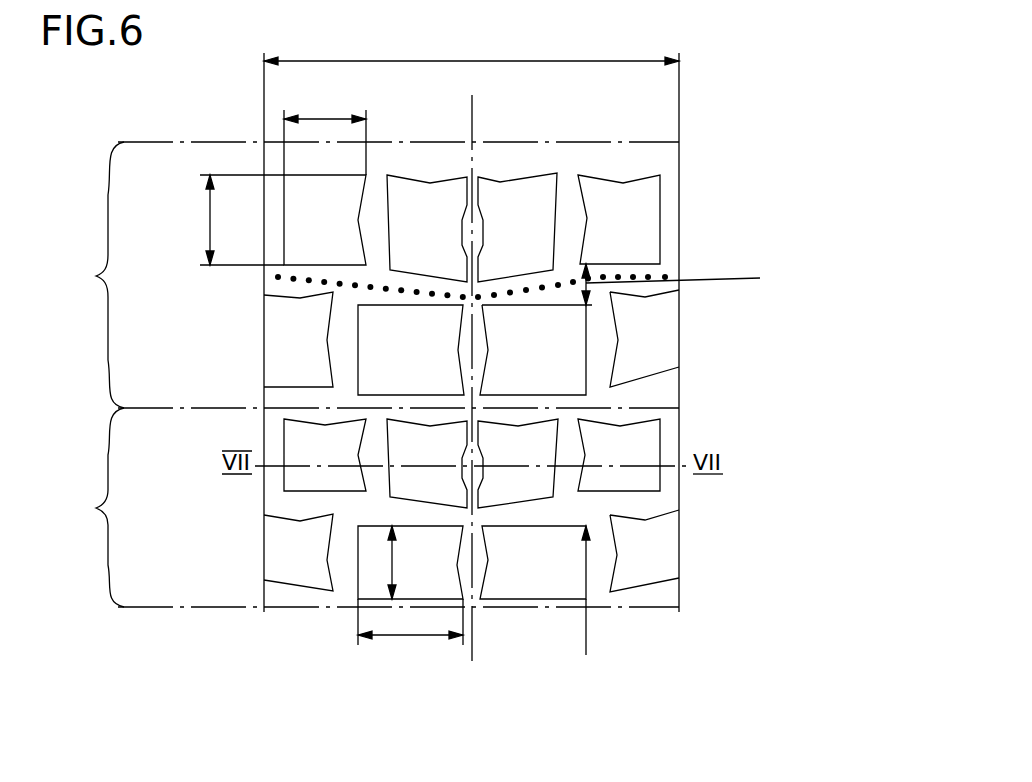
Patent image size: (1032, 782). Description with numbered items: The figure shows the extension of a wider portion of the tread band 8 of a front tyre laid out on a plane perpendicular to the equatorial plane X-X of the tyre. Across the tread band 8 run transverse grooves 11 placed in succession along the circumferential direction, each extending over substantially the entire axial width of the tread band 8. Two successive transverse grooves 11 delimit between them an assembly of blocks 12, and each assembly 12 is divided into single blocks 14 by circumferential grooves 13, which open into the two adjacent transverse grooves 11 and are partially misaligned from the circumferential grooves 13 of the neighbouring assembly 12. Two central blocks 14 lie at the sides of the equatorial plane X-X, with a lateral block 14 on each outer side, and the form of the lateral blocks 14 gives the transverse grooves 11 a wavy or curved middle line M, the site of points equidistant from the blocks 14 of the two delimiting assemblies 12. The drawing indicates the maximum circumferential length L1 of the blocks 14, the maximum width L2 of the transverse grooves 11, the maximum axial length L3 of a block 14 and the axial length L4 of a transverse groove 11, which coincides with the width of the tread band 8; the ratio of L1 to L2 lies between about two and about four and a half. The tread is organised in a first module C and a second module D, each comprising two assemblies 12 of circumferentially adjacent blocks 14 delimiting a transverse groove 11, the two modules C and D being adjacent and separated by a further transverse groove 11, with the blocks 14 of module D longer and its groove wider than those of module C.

The tread band 8 is at (703, 260).
The transverse groove 11 is at (668, 273).
The assembly of blocks 12 is at (670, 227).
The circumferential groove 13 is at (373, 243).
The block 14 is at (433, 366).
The middle line M is at (280, 279).
The equatorial plane X is at (474, 106).
The circumferential length of the blocks L1 is at (210, 220).
The width of the transverse groove L2 is at (760, 278).
The maximum axial length of the block L3 is at (320, 119).
The axial length of the transverse groove L4 is at (470, 61).
The second module D is at (96, 275).
The first module C is at (96, 507).